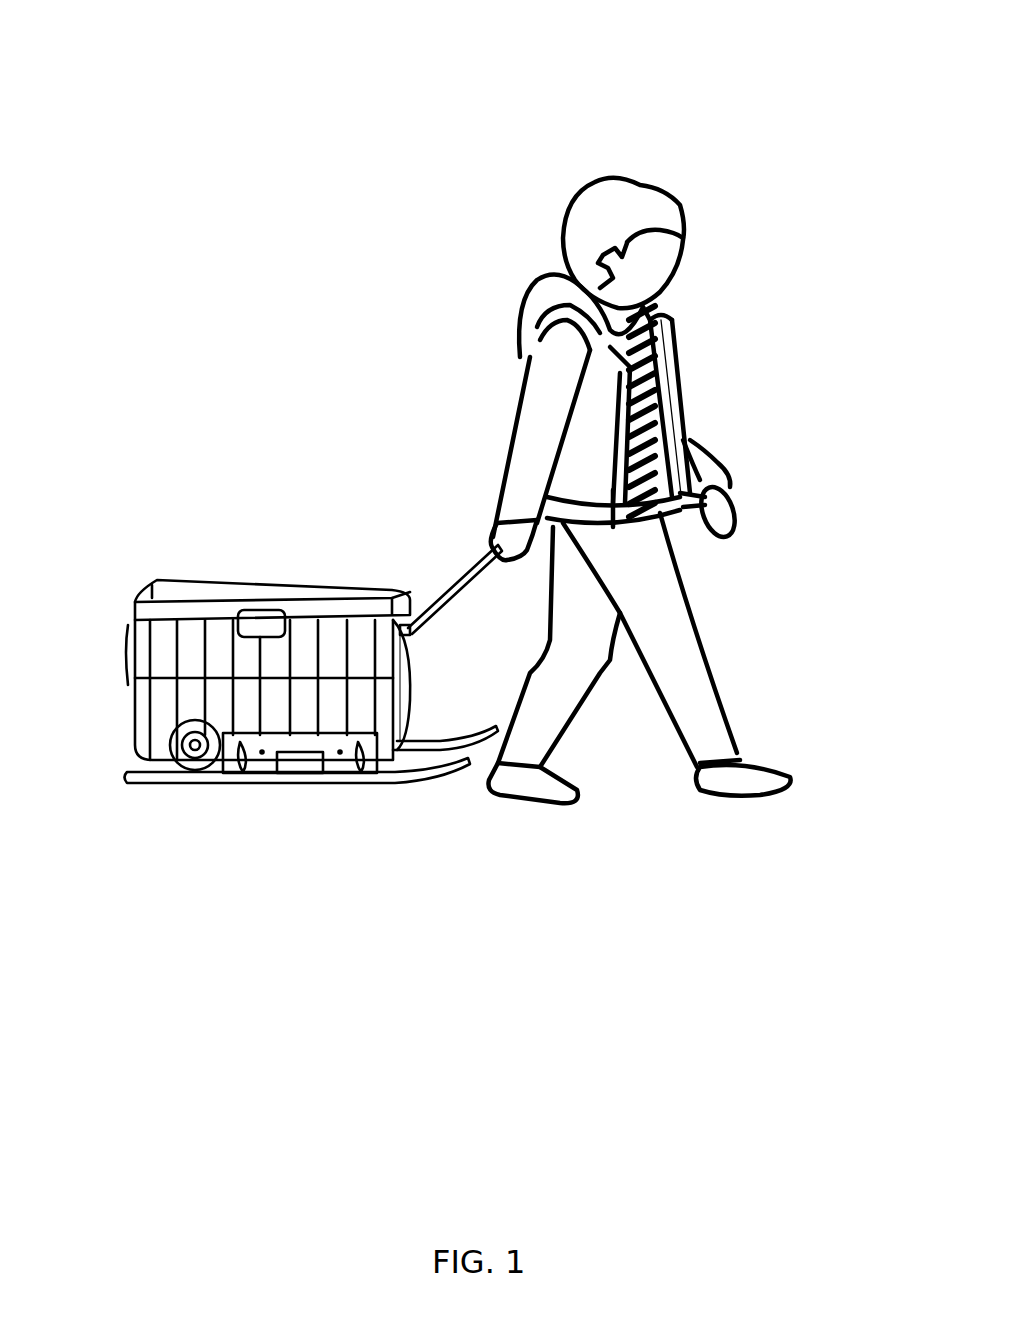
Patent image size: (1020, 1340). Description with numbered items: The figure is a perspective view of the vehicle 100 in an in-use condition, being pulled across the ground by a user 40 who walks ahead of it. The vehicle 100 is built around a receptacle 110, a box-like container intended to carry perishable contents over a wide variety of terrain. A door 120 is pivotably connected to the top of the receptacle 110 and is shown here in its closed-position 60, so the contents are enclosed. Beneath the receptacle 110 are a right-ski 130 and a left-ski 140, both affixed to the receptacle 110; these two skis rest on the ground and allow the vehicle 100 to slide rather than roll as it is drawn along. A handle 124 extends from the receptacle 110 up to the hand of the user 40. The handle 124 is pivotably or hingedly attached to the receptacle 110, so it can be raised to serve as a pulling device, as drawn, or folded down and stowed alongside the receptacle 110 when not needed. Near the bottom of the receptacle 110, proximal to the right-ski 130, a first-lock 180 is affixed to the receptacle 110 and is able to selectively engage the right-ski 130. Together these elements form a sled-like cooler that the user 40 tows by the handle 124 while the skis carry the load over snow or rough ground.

The closed-position 60 is at (840, 33).
The user 40 is at (680, 343).
The vehicle 100 is at (306, 436).
The receptacle 110 is at (135, 700).
The door 120 is at (200, 578).
The handle 124 is at (460, 572).
The right-ski 130 is at (430, 785).
The left-ski 140 is at (430, 745).
The first-lock 180 is at (285, 770).